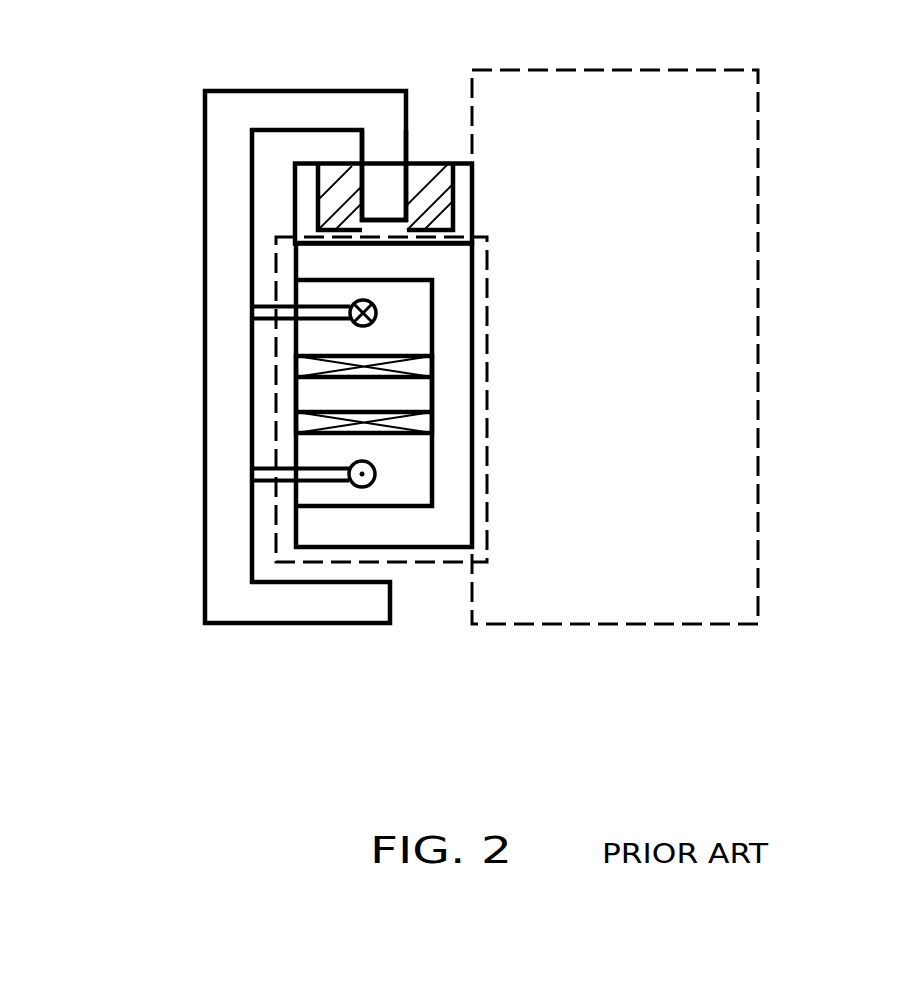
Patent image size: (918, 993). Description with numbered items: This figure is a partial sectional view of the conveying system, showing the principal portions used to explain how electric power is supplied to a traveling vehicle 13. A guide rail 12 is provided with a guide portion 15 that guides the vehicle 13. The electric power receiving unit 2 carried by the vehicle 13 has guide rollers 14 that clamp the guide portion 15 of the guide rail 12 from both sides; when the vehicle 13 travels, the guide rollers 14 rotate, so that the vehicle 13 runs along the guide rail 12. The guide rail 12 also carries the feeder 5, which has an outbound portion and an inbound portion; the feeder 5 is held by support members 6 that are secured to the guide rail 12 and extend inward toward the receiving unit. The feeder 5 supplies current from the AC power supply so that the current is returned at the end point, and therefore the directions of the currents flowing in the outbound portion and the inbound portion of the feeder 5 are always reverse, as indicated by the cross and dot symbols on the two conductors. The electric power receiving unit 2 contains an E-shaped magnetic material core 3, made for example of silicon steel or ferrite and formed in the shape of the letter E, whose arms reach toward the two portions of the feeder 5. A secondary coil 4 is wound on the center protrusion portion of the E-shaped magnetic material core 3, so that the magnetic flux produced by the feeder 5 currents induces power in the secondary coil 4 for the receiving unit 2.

The electric power receiving unit 2 is at (430, 562).
The E-shaped magnetic material core 3 is at (453, 445).
The secondary coil 4 is at (433, 423).
The feeder 5 is at (403, 458).
The support members 6 is at (250, 473).
The guide rail 12 is at (325, 89).
The vehicle 13 is at (760, 353).
The guide rollers 14 is at (438, 192).
The guide portion 15 is at (388, 147).